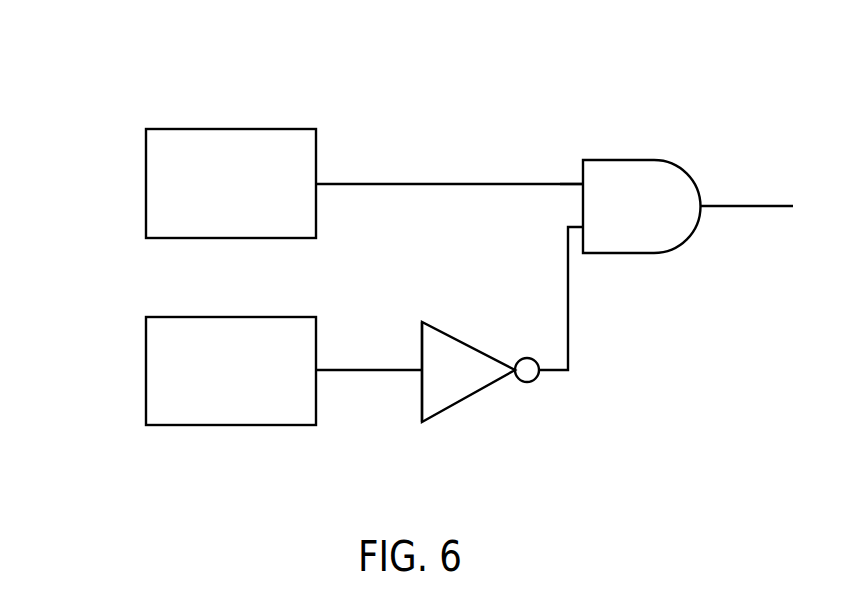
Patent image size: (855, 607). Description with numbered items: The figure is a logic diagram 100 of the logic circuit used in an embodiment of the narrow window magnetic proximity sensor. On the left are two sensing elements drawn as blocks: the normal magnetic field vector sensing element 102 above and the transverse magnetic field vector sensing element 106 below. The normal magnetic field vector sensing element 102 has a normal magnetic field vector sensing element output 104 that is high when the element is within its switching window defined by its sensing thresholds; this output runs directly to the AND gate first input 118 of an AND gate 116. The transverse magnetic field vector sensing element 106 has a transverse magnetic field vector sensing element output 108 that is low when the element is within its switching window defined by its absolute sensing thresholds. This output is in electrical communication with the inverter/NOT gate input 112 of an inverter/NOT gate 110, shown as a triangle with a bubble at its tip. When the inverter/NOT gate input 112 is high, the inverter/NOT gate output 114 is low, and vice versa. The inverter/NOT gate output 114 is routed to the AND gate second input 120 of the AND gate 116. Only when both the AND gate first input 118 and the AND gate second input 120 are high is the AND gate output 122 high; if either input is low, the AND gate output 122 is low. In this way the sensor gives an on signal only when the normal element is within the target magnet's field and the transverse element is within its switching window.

The logic diagram 100 is at (126, 76).
The normal magnetic field vector sensing element 102 is at (146, 185).
The normal magnetic field vector sensing element output 104 is at (318, 184).
The transverse magnetic field vector sensing element 106 is at (146, 372).
The transverse magnetic field vector sensing element output 108 is at (318, 372).
The inverter/NOT gate 110 is at (465, 397).
The inverter/NOT gate input 112 is at (420, 373).
The inverter/NOT gate output 114 is at (538, 378).
The AND gate 116 is at (663, 161).
The AND gate first input 118 is at (583, 184).
The AND gate second input 120 is at (583, 226).
The AND gate output 122 is at (700, 206).